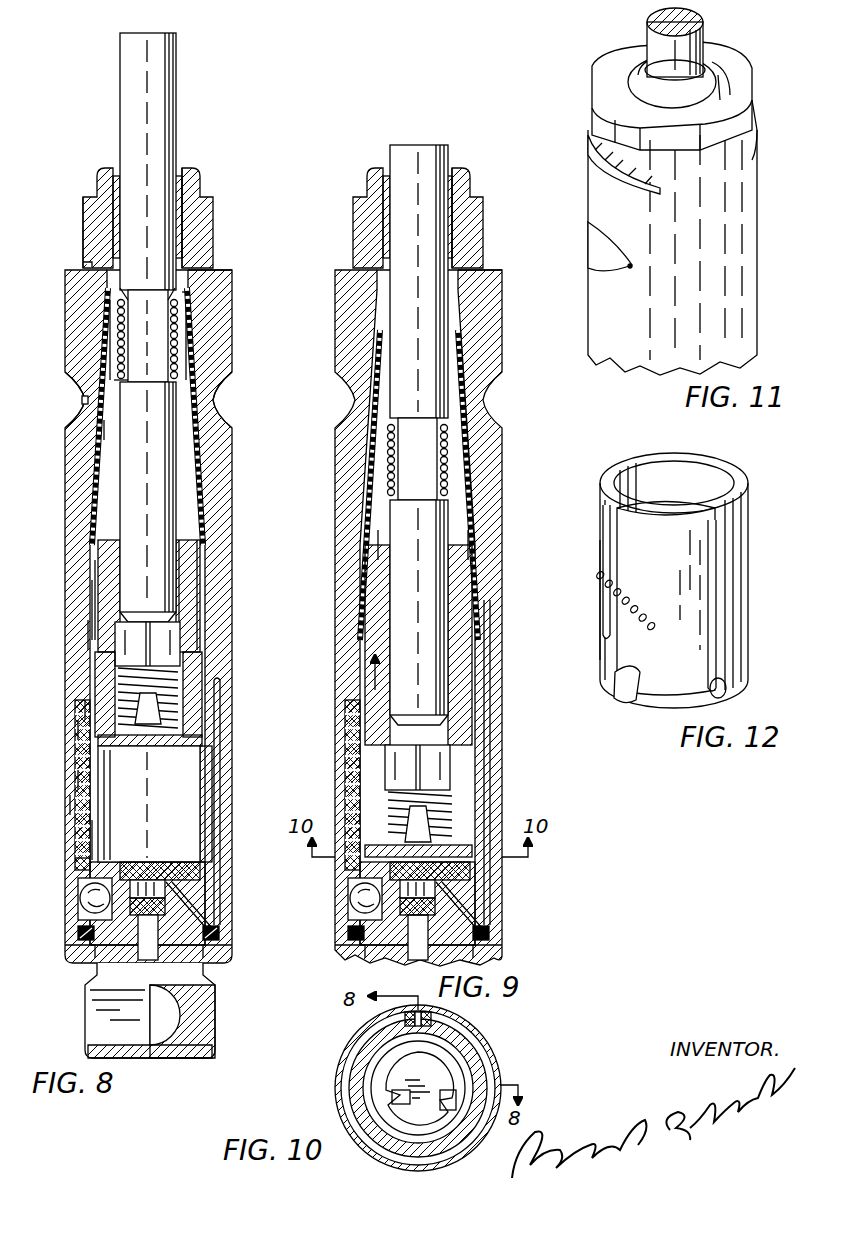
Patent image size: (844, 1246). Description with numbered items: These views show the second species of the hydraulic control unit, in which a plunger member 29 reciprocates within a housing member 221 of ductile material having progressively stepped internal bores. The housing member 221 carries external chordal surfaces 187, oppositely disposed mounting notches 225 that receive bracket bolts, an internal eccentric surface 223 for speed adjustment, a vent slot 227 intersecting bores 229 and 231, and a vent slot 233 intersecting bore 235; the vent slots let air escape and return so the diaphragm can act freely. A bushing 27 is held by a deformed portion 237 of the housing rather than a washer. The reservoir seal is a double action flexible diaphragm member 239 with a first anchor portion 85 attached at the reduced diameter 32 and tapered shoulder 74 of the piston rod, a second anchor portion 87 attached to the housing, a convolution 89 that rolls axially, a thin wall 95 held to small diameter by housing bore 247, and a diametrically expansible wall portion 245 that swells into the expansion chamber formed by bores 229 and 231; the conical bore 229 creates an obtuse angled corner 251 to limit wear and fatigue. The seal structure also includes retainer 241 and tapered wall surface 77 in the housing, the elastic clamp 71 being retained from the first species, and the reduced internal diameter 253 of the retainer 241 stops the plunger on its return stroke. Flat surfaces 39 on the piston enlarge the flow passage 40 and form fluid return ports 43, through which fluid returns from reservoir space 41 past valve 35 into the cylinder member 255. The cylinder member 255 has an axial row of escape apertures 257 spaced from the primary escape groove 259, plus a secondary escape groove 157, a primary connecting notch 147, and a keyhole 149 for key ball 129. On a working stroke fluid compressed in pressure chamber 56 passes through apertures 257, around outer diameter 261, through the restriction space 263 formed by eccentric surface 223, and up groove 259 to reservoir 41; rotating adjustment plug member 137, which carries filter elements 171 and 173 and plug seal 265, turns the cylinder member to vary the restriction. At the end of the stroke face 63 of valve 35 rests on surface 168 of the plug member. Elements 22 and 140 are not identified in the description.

In FIG. 8, the pin 22 is at (85, 966).
In FIG. 8, the bushing 27 is at (180, 228).
In FIG. 8, the plunger member 29 is at (179, 106).
In FIG. 9, the plunger member 29 is at (450, 160).
In FIG. 11, the plunger member 29 is at (675, 44).
In FIG. 8, the reduced diameter portion 32 is at (112, 380).
In FIG. 8, the valve member 35 is at (180, 741).
In FIG. 9, the valve member 35 is at (480, 851).
In FIG. 8, the flat surfaces 39 is at (200, 576).
In FIG. 8, the fluid flow passage 40 is at (184, 546).
In FIG. 8, the reservoir space 41 is at (198, 518).
In FIG. 9, the reservoir space 41 is at (455, 512).
In FIG. 8, the fluid return ports 43 is at (140, 656).
In FIG. 9, the fluid return ports 43 is at (418, 766).
In FIG. 8, the pressure chamber 56 is at (77, 860).
In FIG. 8, the face 63 is at (165, 762).
In FIG. 8, the elastic clamp member 71 is at (179, 318).
In FIG. 8, the tapered shoulder portion 74 is at (128, 300).
In FIG. 8, the tapered wall surface 77 is at (92, 606).
In FIG. 8, the first anchor portion 85 is at (138, 340).
In FIG. 8, the second anchor portion 87 is at (95, 580).
In FIG. 8, the convolution 89 is at (214, 263).
In FIG. 8, the diaphragm wall 95 is at (186, 304).
In FIG. 8, the key ball 129 is at (84, 900).
In FIG. 8, the adjustment plug member 137 is at (218, 986).
In FIG. 8, the end plate 140 is at (85, 975).
In FIG. 8, the primary connecting notch 147 is at (92, 690).
In FIG. 12, the keyhole 149 is at (612, 697).
In FIG. 12, the secondary escape groove 157 is at (666, 599).
In FIG. 8, the surface of plug member 168 is at (175, 872).
In FIG. 8, the filter element 171 is at (217, 860).
In FIG. 8, the filter element 173 is at (170, 902).
In FIG. 8, the external chordal surfaces 187 is at (83, 218).
In FIG. 11, the external chordal surfaces 187 is at (606, 110).
In FIG. 8, the housing member 221 is at (200, 170).
In FIG. 11, the housing member 221 is at (612, 332).
In FIG. 8, the internal eccentric surface 223 is at (70, 805).
In FIG. 10, the internal eccentric surface 223 is at (496, 1072).
In FIG. 12, the internal eccentric surface 223 is at (722, 600).
In FIG. 8, the mounting notches 225 is at (216, 415).
In FIG. 11, the mounting notches 225 is at (608, 268).
In FIG. 8, the vent slot 227 is at (83, 400).
In FIG. 11, the vent slot 227 is at (628, 268).
In FIG. 8, the bore 229 is at (112, 350).
In FIG. 8, the bore 231 is at (75, 485).
In FIG. 8, the vent slot 233 is at (86, 265).
In FIG. 11, the vent slot 233 is at (628, 196).
In FIG. 8, the bore 235 is at (183, 210).
In FIG. 8, the deformed portion 237 is at (186, 262).
In FIG. 8, the double action flexible diaphragm member 239 is at (98, 457).
In FIG. 9, the double action flexible diaphragm member 239 is at (358, 463).
In FIG. 8, the retainer 241 is at (86, 634).
In FIG. 8, the diametrically expansible wall portion 245 is at (104, 432).
In FIG. 8, the housing bore 247 is at (126, 296).
In FIG. 8, the obtuse angled corner 251 is at (190, 340).
In FIG. 8, the internal diameter 253 is at (197, 648).
In FIG. 8, the cylinder member 255 is at (73, 757).
In FIG. 10, the cylinder member 255 is at (352, 1049).
In FIG. 12, the cylinder member 255 is at (596, 618).
In FIG. 8, the escape apertures 257 is at (78, 781).
In FIG. 12, the escape apertures 257 is at (623, 645).
In FIG. 8, the primary escape groove 259 is at (84, 710).
In FIG. 10, the primary escape groove 259 is at (400, 1025).
In FIG. 12, the primary escape groove 259 is at (604, 560).
In FIG. 8, the outer diameter 261 is at (118, 842).
In FIG. 10, the outer diameter 261 is at (485, 1060).
In FIG. 12, the outer diameter 261 is at (600, 593).
In FIG. 8, the space 263 is at (78, 728).
In FIG. 10, the space 263 is at (428, 1005).
In FIG. 8, the plug seal 265 is at (78, 933).